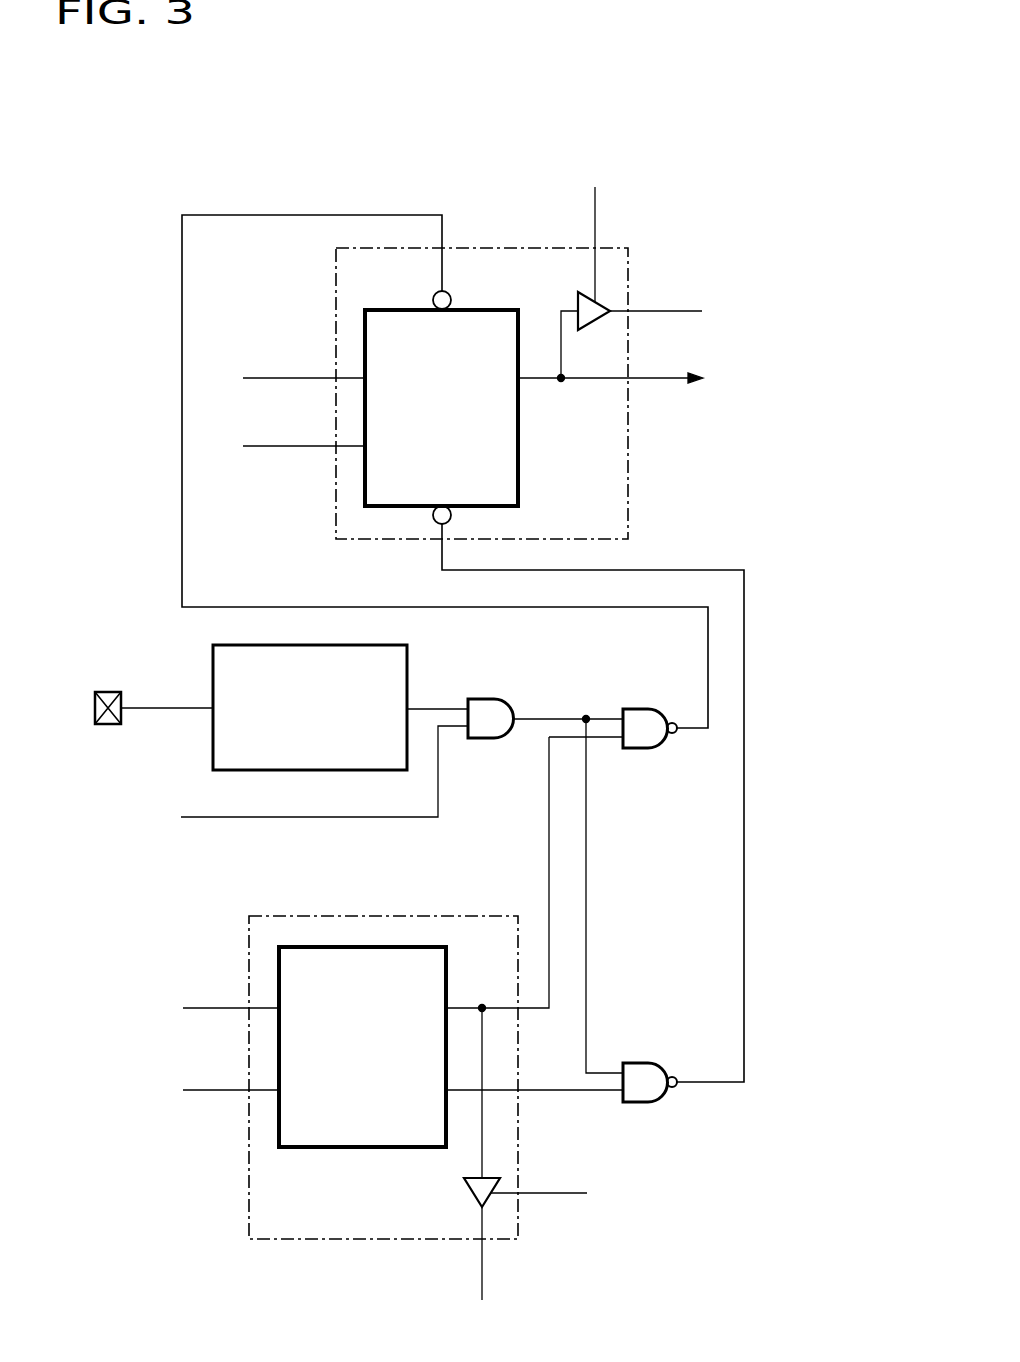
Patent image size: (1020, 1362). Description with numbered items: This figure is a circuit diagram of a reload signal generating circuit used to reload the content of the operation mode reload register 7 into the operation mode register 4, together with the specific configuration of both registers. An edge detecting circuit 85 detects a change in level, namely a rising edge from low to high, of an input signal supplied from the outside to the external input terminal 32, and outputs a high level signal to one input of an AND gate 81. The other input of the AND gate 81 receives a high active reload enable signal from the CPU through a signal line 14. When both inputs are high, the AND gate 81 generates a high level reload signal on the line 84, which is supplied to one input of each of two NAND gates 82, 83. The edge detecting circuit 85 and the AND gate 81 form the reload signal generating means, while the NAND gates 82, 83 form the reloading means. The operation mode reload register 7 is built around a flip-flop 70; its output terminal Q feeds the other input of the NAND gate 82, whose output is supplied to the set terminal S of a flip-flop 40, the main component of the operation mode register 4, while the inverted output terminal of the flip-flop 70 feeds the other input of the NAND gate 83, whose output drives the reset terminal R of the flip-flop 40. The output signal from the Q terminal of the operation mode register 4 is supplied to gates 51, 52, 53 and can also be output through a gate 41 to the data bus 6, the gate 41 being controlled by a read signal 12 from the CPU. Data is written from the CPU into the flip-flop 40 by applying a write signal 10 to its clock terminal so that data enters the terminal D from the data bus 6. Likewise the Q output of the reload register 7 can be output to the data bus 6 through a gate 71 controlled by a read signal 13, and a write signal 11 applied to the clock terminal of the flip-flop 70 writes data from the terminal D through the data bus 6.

The operation mode register 4 is at (535, 218).
The flip-flop 40 is at (520, 477).
The gate 41 is at (578, 302).
The read signal 12 is at (595, 227).
The data bus 6 is at (264, 378).
The gate 51 is at (700, 379).
The gate 52 is at (700, 379).
The gate 53 is at (700, 379).
The write signal 10 is at (276, 447).
The external input terminal 32 is at (95, 707).
The edge detecting circuit 85 is at (213, 738).
The RL signal line 84 is at (526, 712).
The AND gate 81 is at (487, 740).
The NAND gate 82 is at (648, 750).
The NAND gate 83 is at (638, 1060).
The signal line 14 is at (227, 819).
The operation mode reload register 7 is at (231, 1220).
The flip-flop 70 is at (338, 1150).
The gate 71 is at (466, 1192).
The write signal 11 is at (213, 1090).
The read signal 13 is at (548, 1195).